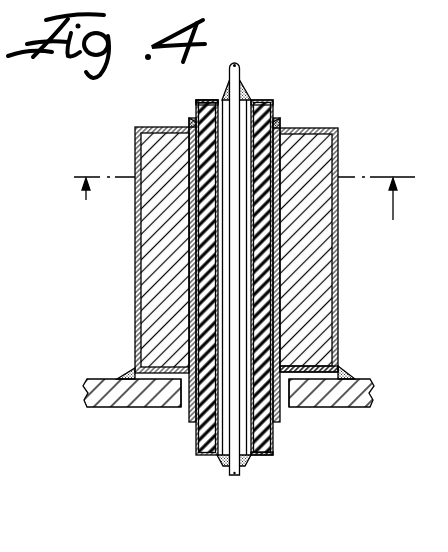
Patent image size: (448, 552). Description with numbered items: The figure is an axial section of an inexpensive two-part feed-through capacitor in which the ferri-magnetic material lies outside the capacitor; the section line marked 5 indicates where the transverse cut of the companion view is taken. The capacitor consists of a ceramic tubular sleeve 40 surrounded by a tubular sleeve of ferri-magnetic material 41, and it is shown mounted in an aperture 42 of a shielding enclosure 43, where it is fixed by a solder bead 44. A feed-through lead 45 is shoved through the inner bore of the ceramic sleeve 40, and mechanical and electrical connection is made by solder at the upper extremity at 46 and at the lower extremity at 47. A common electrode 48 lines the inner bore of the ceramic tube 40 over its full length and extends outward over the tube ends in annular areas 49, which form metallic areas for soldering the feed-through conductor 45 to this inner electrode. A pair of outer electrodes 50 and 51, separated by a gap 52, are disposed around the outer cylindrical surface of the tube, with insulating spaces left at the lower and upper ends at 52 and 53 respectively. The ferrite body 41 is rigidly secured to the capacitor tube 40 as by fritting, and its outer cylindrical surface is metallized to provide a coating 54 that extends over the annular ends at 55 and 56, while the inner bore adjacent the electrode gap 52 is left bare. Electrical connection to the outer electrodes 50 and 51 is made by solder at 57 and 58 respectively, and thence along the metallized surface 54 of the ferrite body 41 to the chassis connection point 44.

The section line 5- 5 is at (244, 185).
The ceramic tubular sleeve 40 is at (277, 112).
The tubular sleeve of ferri-magnetic material 41 is at (135, 240).
The aperture 42 is at (288, 396).
The shielding enclosure 43 is at (360, 381).
The solder bead 44 is at (342, 371).
The feed-through lead 45 is at (241, 67).
The solder connection at upper extremity 46 is at (247, 92).
The solder connection at lower extremity 47 is at (222, 460).
The common electrode 48 is at (262, 99).
The annular areas 49 is at (212, 99).
The outer electrode 50 is at (198, 302).
The outer electrode 51 is at (134, 184).
The gap 52 is at (190, 262).
The space at upper end 53 is at (196, 108).
The coating 54 is at (338, 223).
The annular end coating 55 is at (324, 378).
The annular end coating 56 is at (334, 127).
The solder connection 57 is at (189, 124).
The solder connection 58 is at (183, 402).